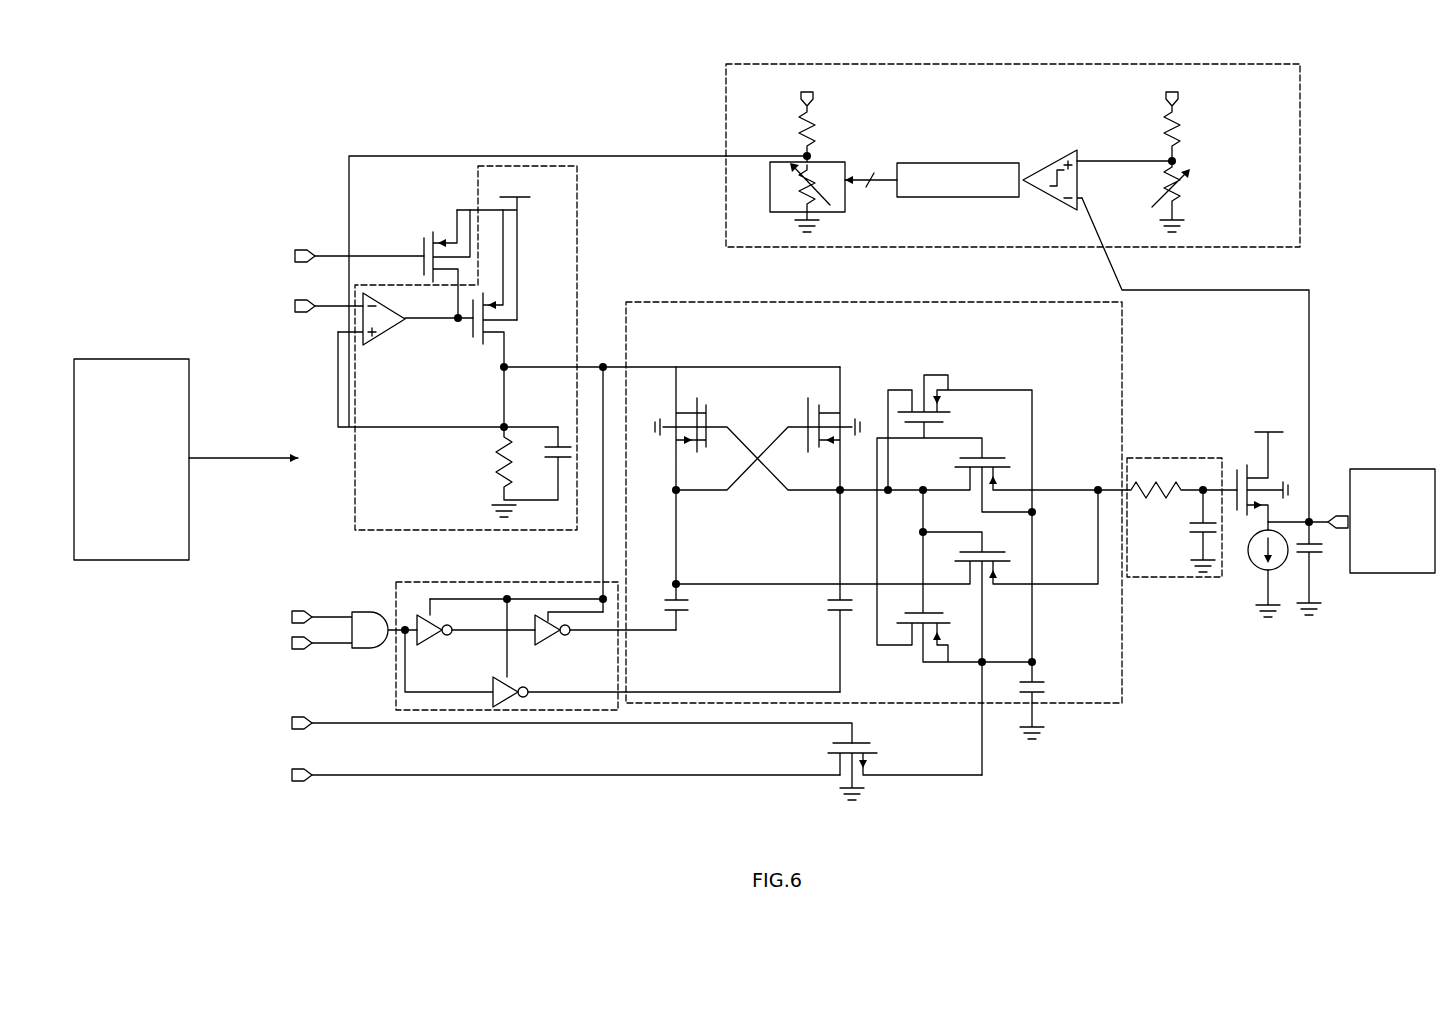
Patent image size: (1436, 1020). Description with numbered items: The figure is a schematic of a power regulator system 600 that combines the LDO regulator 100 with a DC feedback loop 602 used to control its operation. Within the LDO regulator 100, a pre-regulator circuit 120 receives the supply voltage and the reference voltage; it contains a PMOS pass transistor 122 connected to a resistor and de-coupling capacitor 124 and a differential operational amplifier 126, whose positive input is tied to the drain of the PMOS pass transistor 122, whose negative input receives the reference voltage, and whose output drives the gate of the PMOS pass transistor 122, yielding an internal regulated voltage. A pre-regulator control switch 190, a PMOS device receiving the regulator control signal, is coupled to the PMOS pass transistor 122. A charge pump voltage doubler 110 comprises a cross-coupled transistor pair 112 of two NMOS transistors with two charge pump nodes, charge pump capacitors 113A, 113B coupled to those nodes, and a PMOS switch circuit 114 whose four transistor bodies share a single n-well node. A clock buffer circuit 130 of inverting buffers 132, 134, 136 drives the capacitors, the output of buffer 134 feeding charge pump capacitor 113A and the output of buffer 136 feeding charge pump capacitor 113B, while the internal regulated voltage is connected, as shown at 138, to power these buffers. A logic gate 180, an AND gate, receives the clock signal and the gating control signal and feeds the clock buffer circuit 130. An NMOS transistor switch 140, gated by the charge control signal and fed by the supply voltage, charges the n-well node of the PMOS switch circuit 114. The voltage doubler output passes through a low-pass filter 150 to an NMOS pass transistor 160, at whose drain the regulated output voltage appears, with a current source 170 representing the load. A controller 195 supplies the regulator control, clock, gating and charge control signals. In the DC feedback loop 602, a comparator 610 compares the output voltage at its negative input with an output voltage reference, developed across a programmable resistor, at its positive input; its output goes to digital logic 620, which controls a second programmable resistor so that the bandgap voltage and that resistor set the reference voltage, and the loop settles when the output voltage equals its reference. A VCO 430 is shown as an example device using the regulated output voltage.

The power regulator system 600 is at (190, 63).
The LDO regulator 100 is at (296, 212).
The pre-regulator circuit 120 is at (577, 218).
The pre-regulator control switch 190 is at (420, 243).
The differential operational amplifier 126 is at (378, 344).
The PMOS pass transistor 122 is at (470, 340).
The resistor and de-coupling capacitor 124 is at (513, 422).
The controller 195 is at (143, 359).
The clock buffer circuit 130 is at (462, 582).
The logic gate 180 is at (368, 612).
The buffer 132 is at (432, 645).
The buffer 134 is at (550, 640).
The buffer 136 is at (493, 692).
The PRE_REG_IN connection 138 is at (600, 553).
The charge pump voltage doubler 110 is at (882, 302).
The cross-coupled transistor pair 112 is at (756, 390).
The charge pump capacitor 113A is at (681, 612).
The charge pump capacitor 113B is at (838, 612).
The PMOS switch circuit 114 is at (1048, 418).
The NMOS transistor switch 140 is at (830, 748).
The low-pass filter 150 is at (1180, 458).
The NMOS pass transistor 160 is at (1272, 478).
The current source 170 is at (1248, 578).
The VCO 430 is at (1410, 469).
The DC feedback loop 602 is at (1300, 118).
The comparator 610 is at (1057, 150).
The digital logic 620 is at (948, 163).